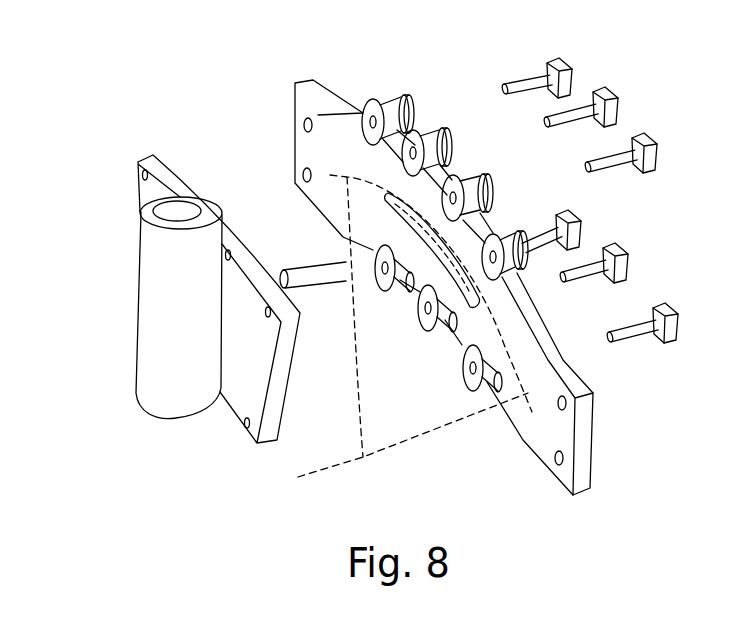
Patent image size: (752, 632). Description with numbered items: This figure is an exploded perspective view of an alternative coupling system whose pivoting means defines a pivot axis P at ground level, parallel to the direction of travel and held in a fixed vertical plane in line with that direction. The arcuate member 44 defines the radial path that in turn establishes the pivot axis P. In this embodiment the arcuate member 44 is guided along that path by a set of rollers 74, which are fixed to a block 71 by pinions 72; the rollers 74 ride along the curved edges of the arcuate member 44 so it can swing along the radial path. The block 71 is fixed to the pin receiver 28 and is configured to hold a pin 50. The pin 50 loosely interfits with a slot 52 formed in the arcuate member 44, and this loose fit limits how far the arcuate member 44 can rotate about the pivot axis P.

The pin receiver 28 is at (146, 389).
The arcuate member 44 is at (587, 477).
The pin 50 is at (313, 268).
The slot 52 is at (458, 280).
The block 71 is at (238, 412).
The pinions 72 is at (615, 93).
The rollers 74 is at (439, 135).
The pivot axis P is at (408, 450).